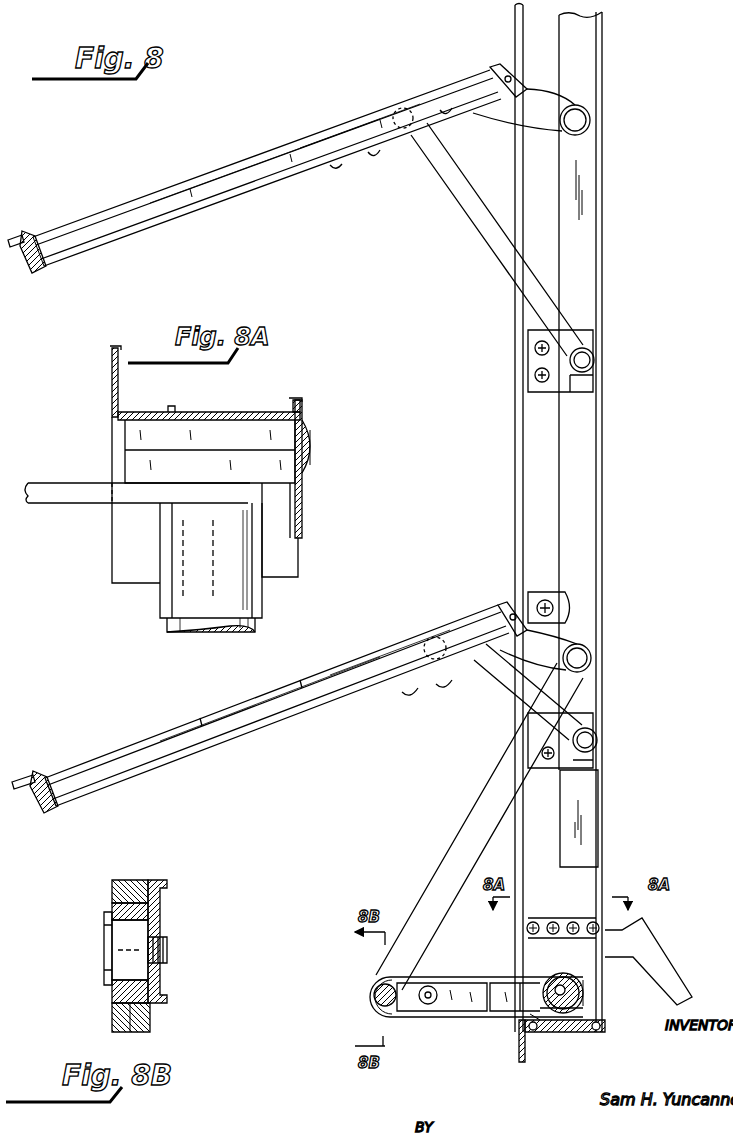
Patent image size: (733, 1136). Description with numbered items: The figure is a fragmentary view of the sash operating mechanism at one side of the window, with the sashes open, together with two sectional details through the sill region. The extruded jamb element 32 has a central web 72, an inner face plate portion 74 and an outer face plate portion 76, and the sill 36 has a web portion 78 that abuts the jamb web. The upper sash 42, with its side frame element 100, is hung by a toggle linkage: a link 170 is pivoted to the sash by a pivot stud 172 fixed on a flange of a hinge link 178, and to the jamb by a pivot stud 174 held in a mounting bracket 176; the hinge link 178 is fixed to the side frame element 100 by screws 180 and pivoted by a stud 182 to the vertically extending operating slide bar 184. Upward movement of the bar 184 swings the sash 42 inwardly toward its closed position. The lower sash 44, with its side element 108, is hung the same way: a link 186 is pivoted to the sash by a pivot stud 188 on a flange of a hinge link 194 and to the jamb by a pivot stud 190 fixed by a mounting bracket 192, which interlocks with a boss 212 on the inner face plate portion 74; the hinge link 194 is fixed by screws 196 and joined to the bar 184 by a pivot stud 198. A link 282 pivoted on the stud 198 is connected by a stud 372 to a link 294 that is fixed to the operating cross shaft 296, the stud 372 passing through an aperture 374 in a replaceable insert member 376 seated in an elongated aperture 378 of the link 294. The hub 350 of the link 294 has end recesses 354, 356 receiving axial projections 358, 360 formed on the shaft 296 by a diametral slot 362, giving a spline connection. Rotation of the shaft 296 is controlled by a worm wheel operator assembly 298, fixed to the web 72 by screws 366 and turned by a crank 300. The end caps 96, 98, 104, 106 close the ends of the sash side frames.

In FIG. 8, the jamb element 32 is at (600, 200).
In FIG. 8A, the jamb element 32 is at (230, 410).
In FIG. 8, the sill 36 is at (519, 1052).
In FIG. 8A, the sill 36 is at (112, 528).
In FIG. 8, the sash 42 is at (128, 200).
In FIG. 8, the sash 44 is at (282, 672).
In FIG. 8, the web 72 is at (590, 882).
In FIG. 8A, the inner face plate portion 74 is at (303, 512).
In FIG. 8A, the outer face plate portion 76 is at (112, 362).
In FIG. 8, the web portion 78 is at (572, 1034).
In FIG. 8, the upper arm end cap 96 is at (500, 64).
In FIG. 8, the upper arm outer end cap 98 is at (33, 274).
In FIG. 8, the side frame element 100 is at (230, 165).
In FIG. 8, the lower arm end cap 104 is at (503, 603).
In FIG. 8, the lower arm outer end cap 106 is at (36, 776).
In FIG. 8, the side frame element 108 is at (236, 708).
In FIG. 8, the link 170 is at (484, 238).
In FIG. 8, the pivot stud 172 is at (418, 105).
In FIG. 8, the pivot stud 174 is at (595, 356).
In FIG. 8, the mounting bracket 176 is at (528, 356).
In FIG. 8, the hinge link 178 is at (567, 100).
In FIG. 8, the screws 180 is at (446, 110).
In FIG. 8, the stud 182 is at (590, 116).
In FIG. 8, the operating slide bar 184 is at (588, 163).
In FIG. 8, the link 186 is at (494, 700).
In FIG. 8, the pivot stud 188 is at (456, 624).
In FIG. 8, the pivot stud 190 is at (599, 737).
In FIG. 8, the mounting bracket 192 is at (596, 767).
In FIG. 8, the hinge link 194 is at (576, 636).
In FIG. 8, the screws 196 is at (442, 687).
In FIG. 8, the pivot stud 198 is at (591, 655).
In FIG. 8A, the boss 212 is at (287, 496).
In FIG. 8, the link 282 is at (451, 845).
In FIG. 8B, the link 282 is at (160, 901).
In FIG. 8, the link 294 is at (451, 1017).
In FIG. 8A, the link 294 is at (42, 503).
In FIG. 8, the operating cross shaft 296 is at (566, 975).
In FIG. 8A, the operating cross shaft 296 is at (200, 632).
In FIG. 8, the worm wheel operator assembly 298 is at (538, 947).
In FIG. 8A, the worm wheel operator assembly 298 is at (248, 470).
In FIG. 8, the crank 300 is at (664, 958).
In FIG. 8A, the crank 300 is at (314, 430).
In FIG. 8, the hub 350 is at (578, 975).
In FIG. 8A, the hub 350 is at (265, 608).
In FIG. 8, the segmental cylindrical end recess 354 is at (584, 994).
In FIG. 8, the segmental cylindrical end recess 356 is at (555, 990).
In FIG. 8, the axial projection 358 is at (585, 1008).
In FIG. 8, the axial projection 360 is at (532, 1016).
In FIG. 8, the diametral slot 362 is at (560, 1033).
In FIG. 8, the screws 366 is at (582, 920).
In FIG. 8, the stud 372 is at (374, 995).
In FIG. 8B, the stud 372 is at (104, 922).
In FIG. 8B, the aperture 374 is at (150, 923).
In FIG. 8, the insert member 376 is at (374, 1005).
In FIG. 8B, the insert member 376 is at (112, 997).
In FIG. 8, the elongated aperture 378 is at (376, 1010).
In FIG. 8B, the elongated aperture 378 is at (130, 1032).